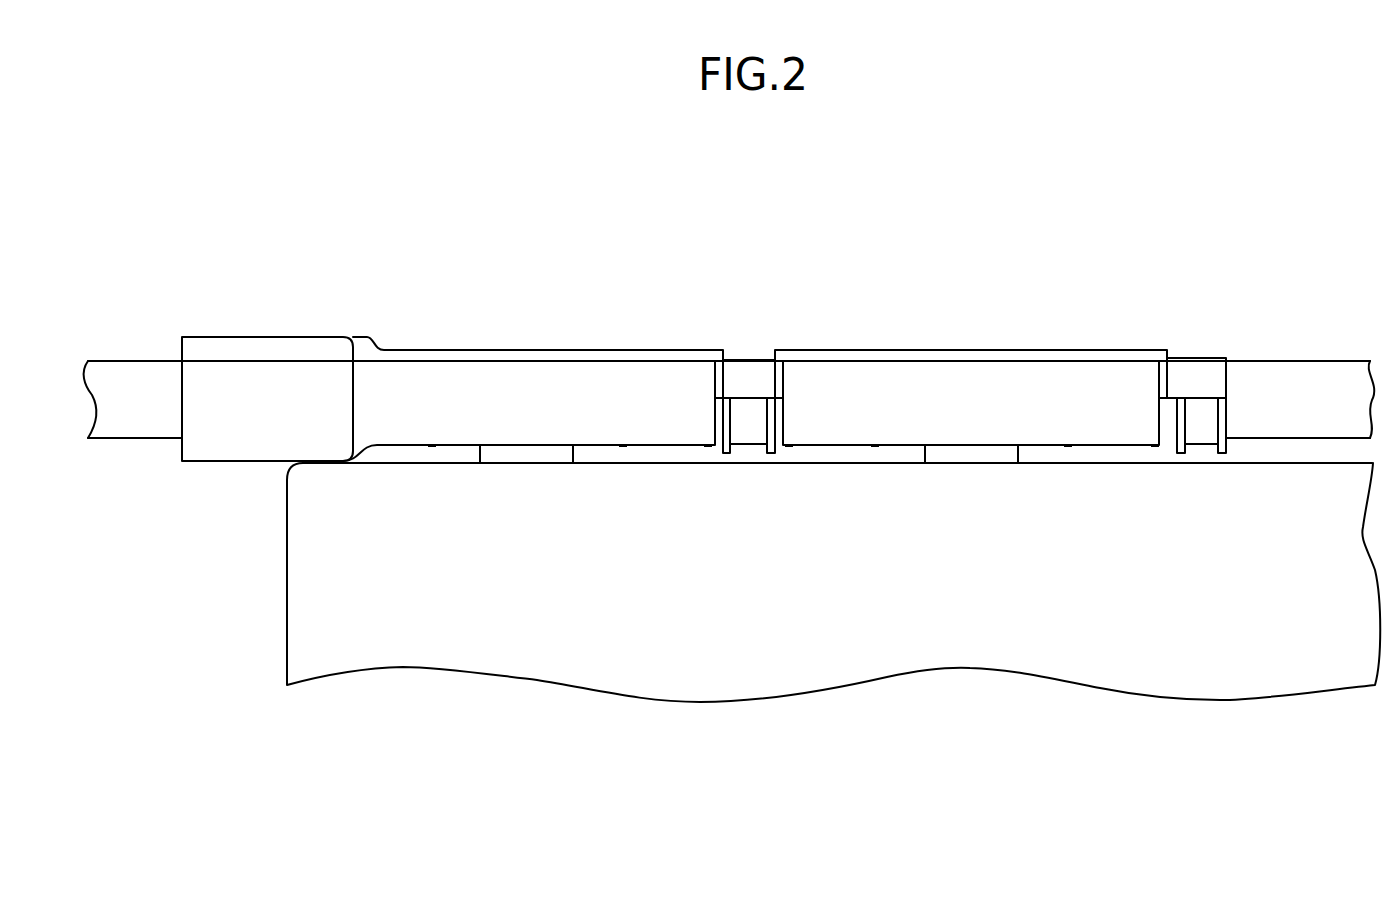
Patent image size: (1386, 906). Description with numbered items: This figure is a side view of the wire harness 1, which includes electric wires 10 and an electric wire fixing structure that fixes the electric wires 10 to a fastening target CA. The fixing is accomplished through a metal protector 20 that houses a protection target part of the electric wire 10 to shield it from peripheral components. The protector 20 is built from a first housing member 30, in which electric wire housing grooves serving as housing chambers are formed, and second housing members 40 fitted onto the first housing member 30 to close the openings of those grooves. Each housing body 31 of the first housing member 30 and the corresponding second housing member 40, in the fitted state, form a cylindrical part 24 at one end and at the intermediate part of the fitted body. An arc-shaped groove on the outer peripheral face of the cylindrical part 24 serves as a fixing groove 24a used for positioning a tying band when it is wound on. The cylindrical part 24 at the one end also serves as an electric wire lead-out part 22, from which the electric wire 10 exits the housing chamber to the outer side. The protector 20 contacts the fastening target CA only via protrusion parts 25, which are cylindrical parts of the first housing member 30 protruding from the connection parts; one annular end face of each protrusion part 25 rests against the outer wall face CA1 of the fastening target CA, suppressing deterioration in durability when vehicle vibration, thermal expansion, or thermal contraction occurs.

The wire harness 1 is at (594, 176).
The electric wire 10 is at (1318, 362).
The protector 20 is at (652, 302).
The electric wire lead-out part 22 is at (260, 345).
The cylindrical part 24 is at (749, 358).
The fixing groove 24a is at (750, 453).
The protrusion part 25 is at (480, 453).
The first housing member 30 is at (227, 472).
The housing body 31 is at (843, 377).
The second housing member 40 is at (532, 340).
The fastening target CA is at (243, 616).
The outer wall face CA1 is at (422, 463).